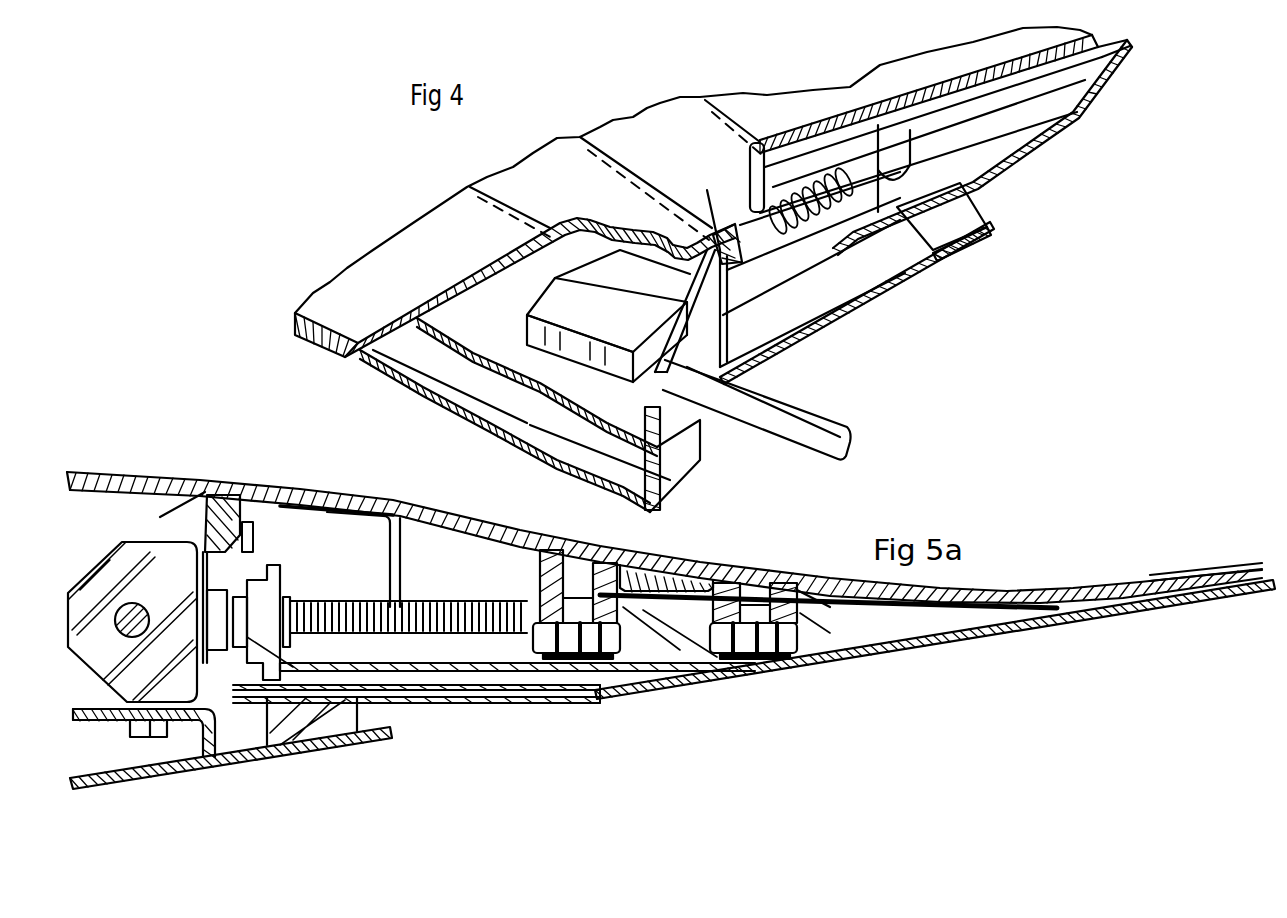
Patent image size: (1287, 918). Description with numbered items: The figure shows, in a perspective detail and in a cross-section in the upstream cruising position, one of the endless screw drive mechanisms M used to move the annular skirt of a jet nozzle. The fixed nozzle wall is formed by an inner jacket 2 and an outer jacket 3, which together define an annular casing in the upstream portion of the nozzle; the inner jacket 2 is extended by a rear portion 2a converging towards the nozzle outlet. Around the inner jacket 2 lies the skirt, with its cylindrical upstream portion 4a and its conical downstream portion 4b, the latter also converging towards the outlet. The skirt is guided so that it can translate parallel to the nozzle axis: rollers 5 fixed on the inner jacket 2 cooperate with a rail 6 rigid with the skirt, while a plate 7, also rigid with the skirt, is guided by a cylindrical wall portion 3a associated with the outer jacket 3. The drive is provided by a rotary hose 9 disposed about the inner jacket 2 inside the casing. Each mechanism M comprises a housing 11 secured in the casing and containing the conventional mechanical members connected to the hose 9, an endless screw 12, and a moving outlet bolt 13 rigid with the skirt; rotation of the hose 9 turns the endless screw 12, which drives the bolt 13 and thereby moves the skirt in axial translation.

In FIG. 4, the inner jacket 2 is at (660, 137).
In FIG. 5A, the inner jacket 2 is at (167, 482).
In FIG. 5A, the rear portion 2a is at (1187, 575).
In FIG. 4, the outer jacket 3 is at (787, 377).
In FIG. 5A, the outer jacket 3 is at (227, 760).
In FIG. 4, the cylindrical wall portion 3a is at (917, 267).
In FIG. 5A, the cylindrical wall portion 3a is at (307, 697).
In FIG. 5A, the cylindrical upstream portion 4a is at (550, 703).
In FIG. 4, the conical downstream portion 4b is at (1060, 120).
In FIG. 5A, the conical downstream portion 4b is at (987, 633).
In FIG. 4, the rollers 5 is at (933, 250).
In FIG. 5A, the rollers 5 is at (770, 667).
In FIG. 4, the rail 6 is at (847, 227).
In FIG. 5A, the rail 6 is at (660, 640).
In FIG. 5A, the plate 7 is at (400, 703).
In FIG. 4, the rotary hose 9 is at (753, 410).
In FIG. 5A, the rotary hose 9 is at (130, 605).
In FIG. 4, the housing 11 is at (543, 343).
In FIG. 5A, the housing 11 is at (90, 640).
In FIG. 5A, the endless screw 12 is at (327, 604).
In FIG. 5A, the moving outlet bolt 13 is at (280, 580).
In FIG. 5A, the endless screw mechanism M is at (253, 560).